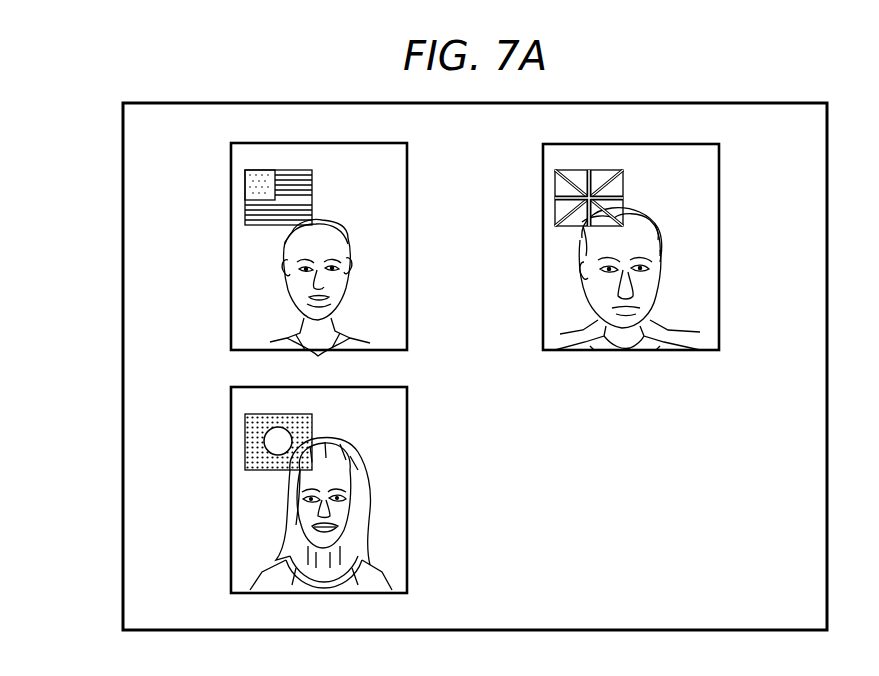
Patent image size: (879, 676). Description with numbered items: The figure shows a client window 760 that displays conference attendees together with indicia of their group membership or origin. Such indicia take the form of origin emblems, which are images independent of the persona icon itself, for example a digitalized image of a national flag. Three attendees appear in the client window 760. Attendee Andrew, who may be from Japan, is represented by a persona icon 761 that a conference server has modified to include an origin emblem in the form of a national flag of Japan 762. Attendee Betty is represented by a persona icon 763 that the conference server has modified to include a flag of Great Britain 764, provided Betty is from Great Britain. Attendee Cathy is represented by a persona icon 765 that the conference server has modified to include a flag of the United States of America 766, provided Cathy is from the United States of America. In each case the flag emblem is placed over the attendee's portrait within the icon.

The client window 760 is at (116, 272).
The persona icon 761 is at (279, 490).
The national flag of Japan 762 is at (312, 442).
The persona icon 763 is at (670, 247).
The flag of Great Britain 764 is at (623, 195).
The persona icon 765 is at (279, 249).
The flag of the United States of America 766 is at (312, 198).